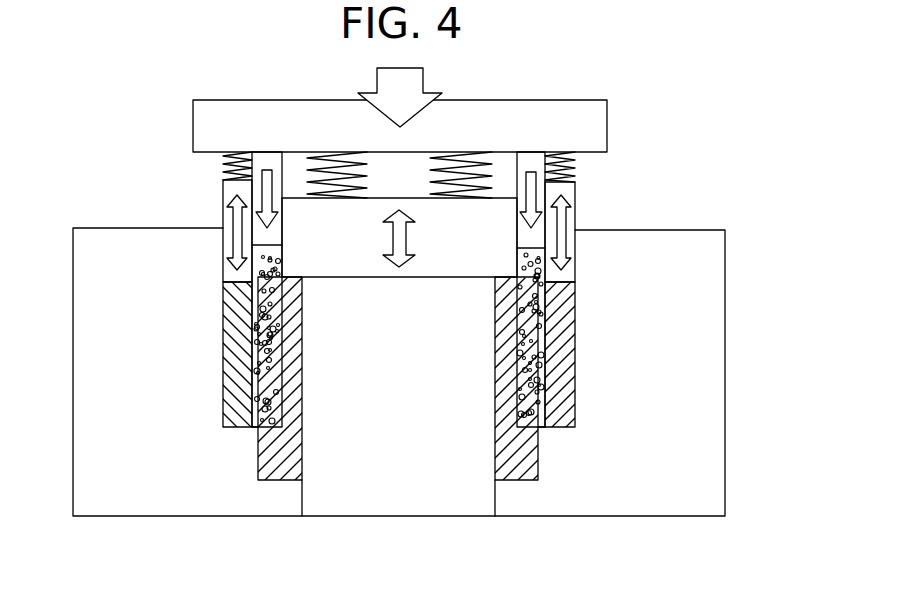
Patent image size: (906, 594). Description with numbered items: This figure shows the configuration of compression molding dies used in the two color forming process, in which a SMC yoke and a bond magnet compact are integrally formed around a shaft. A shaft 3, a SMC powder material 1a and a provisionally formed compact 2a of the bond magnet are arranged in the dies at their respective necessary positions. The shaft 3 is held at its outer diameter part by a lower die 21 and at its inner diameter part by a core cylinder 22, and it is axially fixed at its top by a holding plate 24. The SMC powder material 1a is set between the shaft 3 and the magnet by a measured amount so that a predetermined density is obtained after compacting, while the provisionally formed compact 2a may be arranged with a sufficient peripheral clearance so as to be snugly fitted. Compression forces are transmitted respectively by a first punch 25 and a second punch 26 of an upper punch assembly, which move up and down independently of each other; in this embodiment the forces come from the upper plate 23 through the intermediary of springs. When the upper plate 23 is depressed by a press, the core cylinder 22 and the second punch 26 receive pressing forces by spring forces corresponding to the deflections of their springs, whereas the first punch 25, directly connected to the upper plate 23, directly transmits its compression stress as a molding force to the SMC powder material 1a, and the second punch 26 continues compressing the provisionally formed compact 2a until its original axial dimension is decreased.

The SMC powder material 1a is at (548, 330).
The provisionally formed compact 2a is at (558, 385).
The shaft 3 is at (530, 463).
The lower die 21 is at (713, 477).
The core cylinder 22 is at (441, 509).
The upper plate 23 is at (193, 123).
The holding plate 24 is at (483, 222).
The first punch 25 is at (528, 163).
The second punch 26 is at (223, 192).